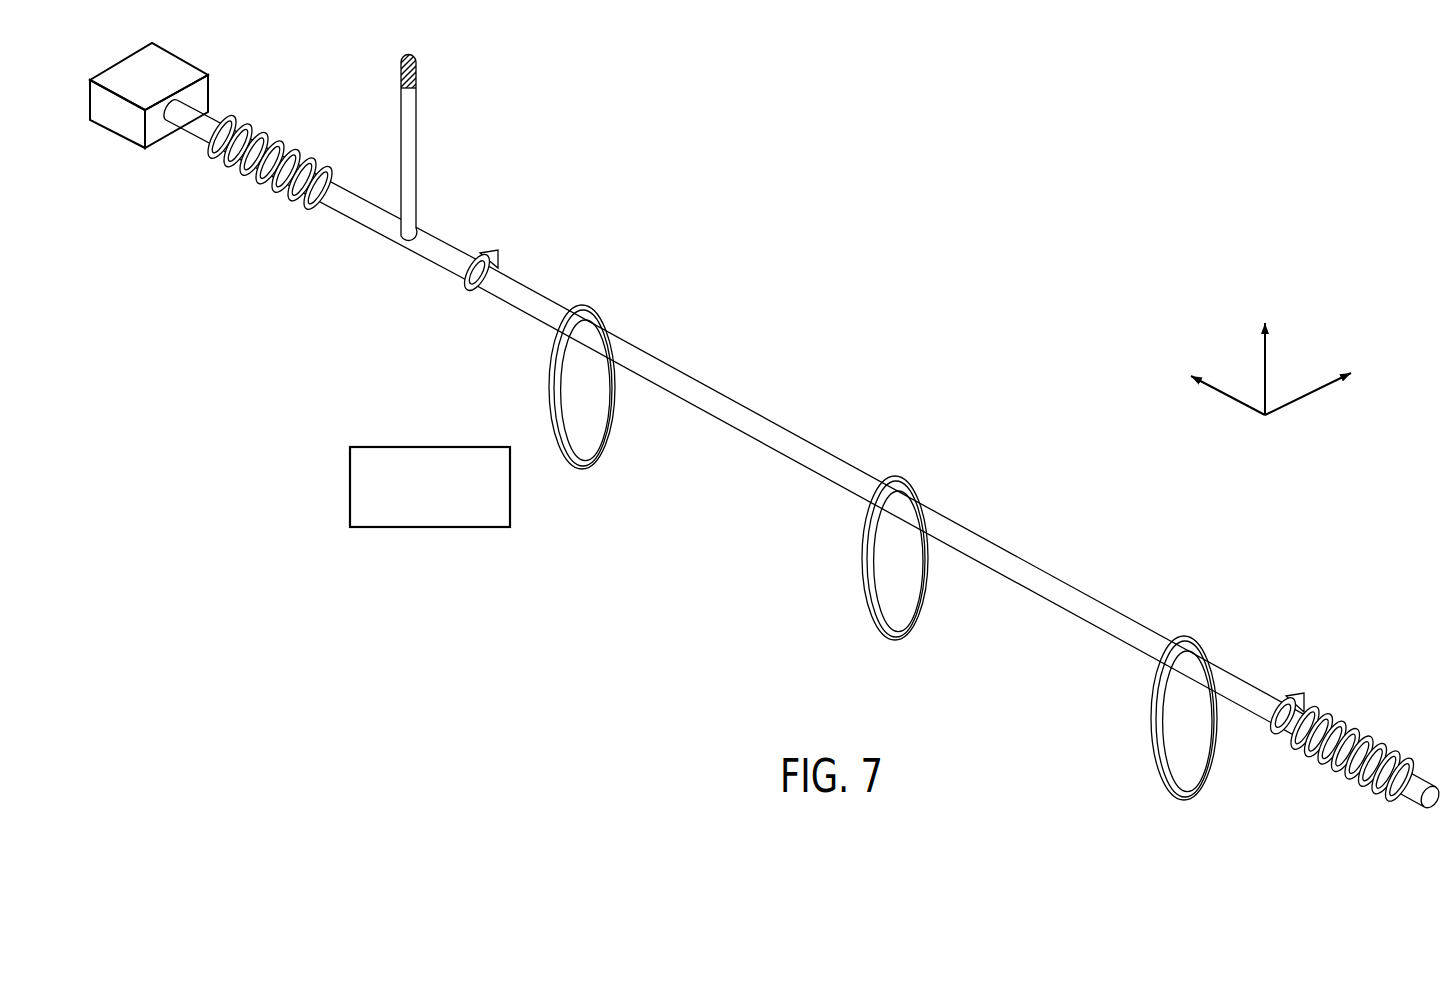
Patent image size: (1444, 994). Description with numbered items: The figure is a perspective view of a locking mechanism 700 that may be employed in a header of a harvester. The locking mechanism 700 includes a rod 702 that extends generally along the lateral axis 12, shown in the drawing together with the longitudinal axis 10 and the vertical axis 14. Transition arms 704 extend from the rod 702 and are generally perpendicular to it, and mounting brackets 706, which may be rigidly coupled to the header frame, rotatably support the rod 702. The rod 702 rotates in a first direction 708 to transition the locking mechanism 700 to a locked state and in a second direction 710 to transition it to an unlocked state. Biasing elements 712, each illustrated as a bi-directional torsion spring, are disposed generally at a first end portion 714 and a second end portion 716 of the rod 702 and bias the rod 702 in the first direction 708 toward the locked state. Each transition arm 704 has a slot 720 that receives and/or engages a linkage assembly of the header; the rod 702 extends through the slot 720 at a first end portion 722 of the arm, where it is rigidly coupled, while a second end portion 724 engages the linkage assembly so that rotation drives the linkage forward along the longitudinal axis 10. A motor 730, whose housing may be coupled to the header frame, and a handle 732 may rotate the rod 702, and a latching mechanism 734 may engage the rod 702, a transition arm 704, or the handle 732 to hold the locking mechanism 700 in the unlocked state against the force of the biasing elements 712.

The locking mechanism 700 is at (992, 168).
The rod 702 is at (1053, 587).
The transition arms 704 is at (1205, 622).
The mounting brackets 706 is at (487, 247).
The first direction 708 is at (720, 443).
The second direction 710 is at (712, 376).
The biasing elements 712 is at (245, 177).
The first end portion 714 is at (1404, 727).
The second end portion 716 is at (303, 130).
The slot 720 is at (897, 603).
The first end portion 722 is at (897, 551).
The second end portion 724 is at (884, 593).
The motor 730 is at (190, 61).
The handle 732 is at (417, 106).
The latching mechanism 734 is at (350, 488).
The longitudinal axis 10 is at (1307, 392).
The lateral axis 12 is at (1246, 408).
The vertical axis 14 is at (1263, 377).